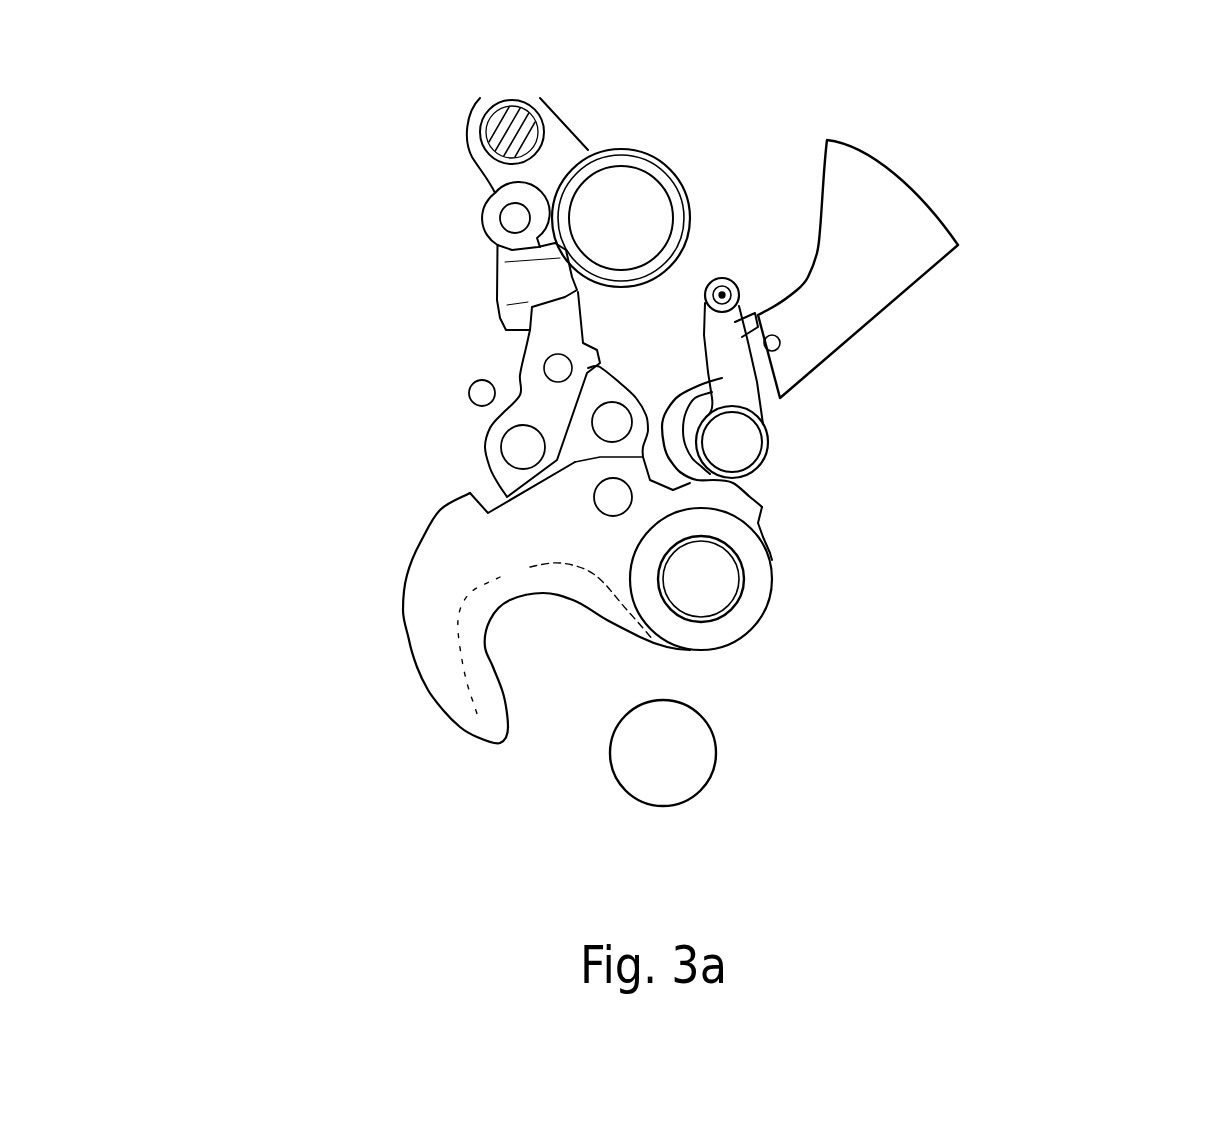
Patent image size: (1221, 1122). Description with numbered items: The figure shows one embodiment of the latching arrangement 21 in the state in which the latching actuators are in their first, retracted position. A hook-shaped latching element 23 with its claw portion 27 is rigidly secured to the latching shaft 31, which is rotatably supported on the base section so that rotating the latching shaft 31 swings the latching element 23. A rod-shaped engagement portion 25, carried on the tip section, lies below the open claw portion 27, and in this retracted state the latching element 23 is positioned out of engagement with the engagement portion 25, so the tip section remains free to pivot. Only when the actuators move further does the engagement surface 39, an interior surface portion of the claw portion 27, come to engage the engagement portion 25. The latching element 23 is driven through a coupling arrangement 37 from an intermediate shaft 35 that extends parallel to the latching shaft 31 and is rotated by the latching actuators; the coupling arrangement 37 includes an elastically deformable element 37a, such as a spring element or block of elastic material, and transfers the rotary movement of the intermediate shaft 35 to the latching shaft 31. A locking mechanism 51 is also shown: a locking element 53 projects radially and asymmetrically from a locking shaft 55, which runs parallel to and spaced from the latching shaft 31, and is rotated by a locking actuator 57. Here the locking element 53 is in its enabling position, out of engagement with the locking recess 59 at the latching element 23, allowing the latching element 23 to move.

The latching arrangement 21 is at (1075, 376).
The latching element 23 is at (311, 489).
The engagement portion 25 is at (680, 757).
The claw portion 27 is at (425, 600).
The latching shaft 31 is at (708, 577).
The intermediate shaft 35 is at (637, 203).
The coupling arrangement 37 is at (391, 307).
The elastically deformable element 37a is at (515, 277).
The engagement surface 39 is at (488, 392).
The locking mechanism 51 is at (887, 415).
The locking element 53 is at (702, 400).
The locking shaft 55 is at (732, 445).
The locking actuator 57 is at (900, 235).
The locking recess 59 is at (760, 532).